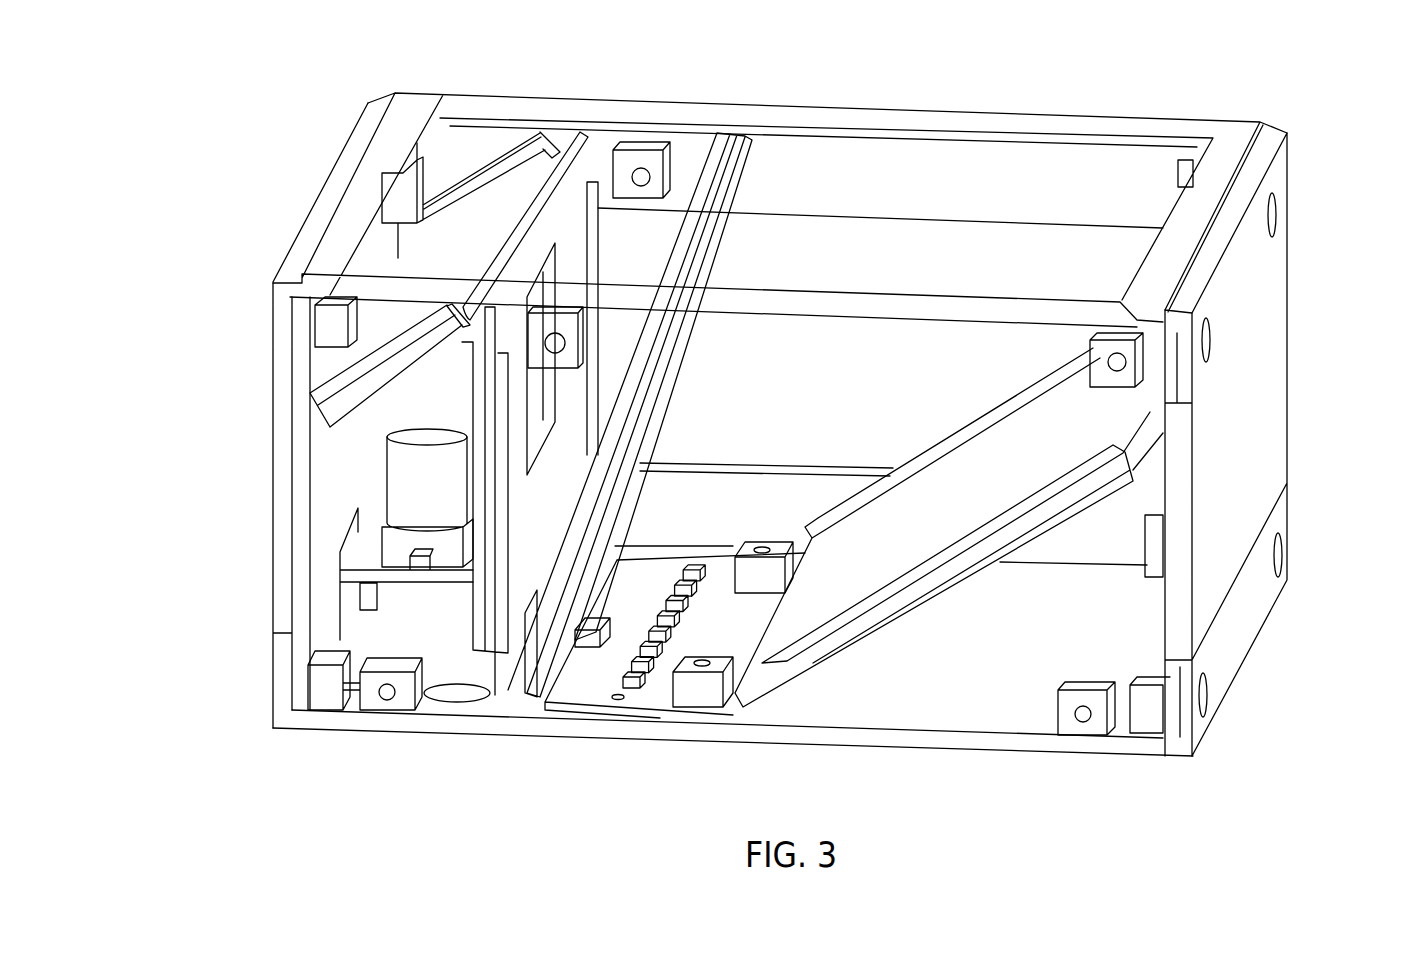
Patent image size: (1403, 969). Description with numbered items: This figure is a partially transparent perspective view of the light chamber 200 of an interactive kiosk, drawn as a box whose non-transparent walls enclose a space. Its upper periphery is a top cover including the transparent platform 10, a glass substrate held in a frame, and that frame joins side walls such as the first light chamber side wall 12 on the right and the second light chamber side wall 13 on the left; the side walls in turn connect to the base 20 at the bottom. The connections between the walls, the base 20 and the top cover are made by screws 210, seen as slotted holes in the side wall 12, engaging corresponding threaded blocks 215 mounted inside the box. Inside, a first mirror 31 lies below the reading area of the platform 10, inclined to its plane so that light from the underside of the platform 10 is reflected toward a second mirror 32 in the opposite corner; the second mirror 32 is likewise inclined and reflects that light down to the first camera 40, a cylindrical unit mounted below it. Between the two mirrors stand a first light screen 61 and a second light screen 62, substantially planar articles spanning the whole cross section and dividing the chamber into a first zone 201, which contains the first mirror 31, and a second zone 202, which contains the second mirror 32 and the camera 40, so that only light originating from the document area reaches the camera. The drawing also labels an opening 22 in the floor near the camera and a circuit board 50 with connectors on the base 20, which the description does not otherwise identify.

The light chamber 200 is at (256, 198).
The platform 10 is at (993, 166).
The first light chamber side wall 12 is at (1253, 444).
The second light chamber side wall 13 is at (272, 586).
The base 20 is at (890, 737).
The opening 22 is at (458, 693).
The first mirror 31 is at (1122, 411).
The second mirror 32 is at (450, 238).
The first camera 40 is at (402, 483).
The circuit board 50 is at (634, 688).
The first light screen 61 is at (730, 135).
The second light screen 62 is at (340, 372).
The first zone 201 is at (846, 392).
The second zone 202 is at (463, 409).
The screws 210 is at (1206, 697).
The threaded blocks 215 is at (1150, 722).